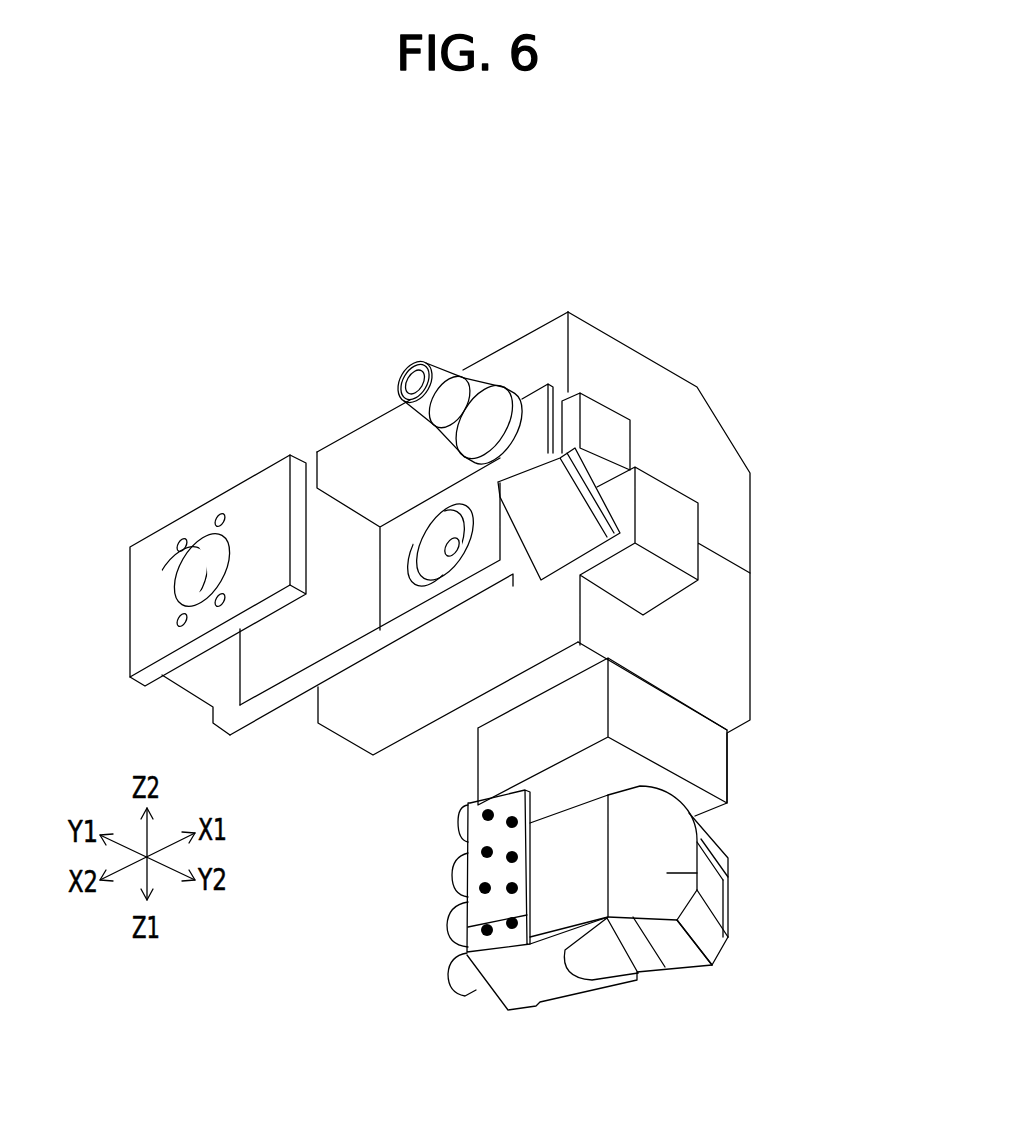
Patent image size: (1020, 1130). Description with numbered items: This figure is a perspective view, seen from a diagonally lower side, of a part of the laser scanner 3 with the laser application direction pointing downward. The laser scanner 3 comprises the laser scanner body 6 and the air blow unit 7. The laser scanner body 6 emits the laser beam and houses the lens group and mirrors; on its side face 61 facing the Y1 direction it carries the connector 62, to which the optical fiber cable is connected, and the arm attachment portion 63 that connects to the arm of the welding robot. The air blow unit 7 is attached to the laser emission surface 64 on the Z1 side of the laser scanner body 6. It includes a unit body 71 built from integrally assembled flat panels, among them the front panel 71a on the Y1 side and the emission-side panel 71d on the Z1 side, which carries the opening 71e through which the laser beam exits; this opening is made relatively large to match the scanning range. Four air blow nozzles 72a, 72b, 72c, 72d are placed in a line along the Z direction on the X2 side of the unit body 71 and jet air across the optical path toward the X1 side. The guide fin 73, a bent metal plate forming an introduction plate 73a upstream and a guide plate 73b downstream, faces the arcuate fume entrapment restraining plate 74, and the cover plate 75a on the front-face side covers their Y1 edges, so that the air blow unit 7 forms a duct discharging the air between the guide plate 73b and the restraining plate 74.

The laser scanner 3 is at (400, 210).
The laser scanner body 6 is at (368, 418).
The side face 61 is at (345, 453).
The connector 62 is at (440, 368).
The arm attachment portion 63 is at (260, 492).
The laser emission surface 64 is at (623, 768).
The air blow unit 7 is at (535, 1012).
The unit body 71 is at (517, 992).
The front panel 71a is at (563, 838).
The emission-side panel 71d is at (553, 985).
The opening 71e is at (605, 963).
The air blow nozzle 72a is at (452, 980).
The air blow nozzle 72b is at (460, 922).
The air blow nozzle 72c is at (462, 871).
The air blow nozzle 72d is at (460, 833).
The guide fin 73 is at (705, 968).
The introduction plate 73a is at (667, 940).
The guide plate 73b is at (713, 943).
The fume entrapment restraining plate 74 is at (718, 847).
The cover plate 75a is at (722, 880).